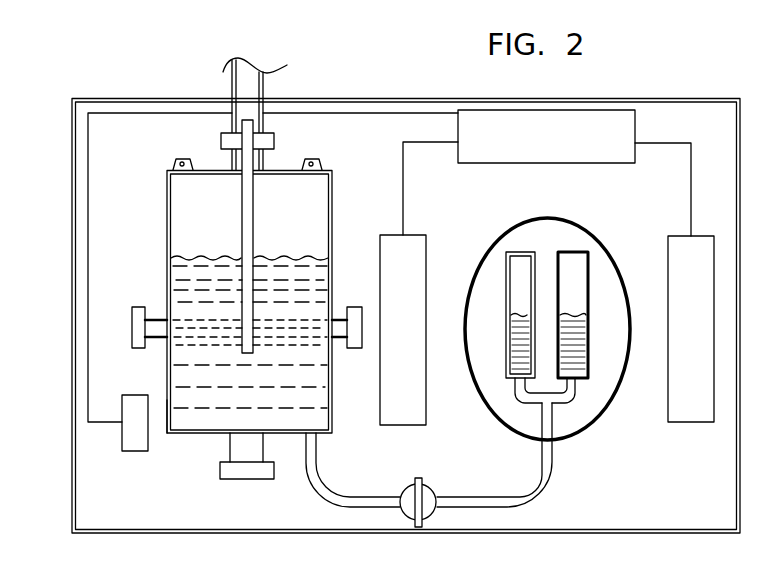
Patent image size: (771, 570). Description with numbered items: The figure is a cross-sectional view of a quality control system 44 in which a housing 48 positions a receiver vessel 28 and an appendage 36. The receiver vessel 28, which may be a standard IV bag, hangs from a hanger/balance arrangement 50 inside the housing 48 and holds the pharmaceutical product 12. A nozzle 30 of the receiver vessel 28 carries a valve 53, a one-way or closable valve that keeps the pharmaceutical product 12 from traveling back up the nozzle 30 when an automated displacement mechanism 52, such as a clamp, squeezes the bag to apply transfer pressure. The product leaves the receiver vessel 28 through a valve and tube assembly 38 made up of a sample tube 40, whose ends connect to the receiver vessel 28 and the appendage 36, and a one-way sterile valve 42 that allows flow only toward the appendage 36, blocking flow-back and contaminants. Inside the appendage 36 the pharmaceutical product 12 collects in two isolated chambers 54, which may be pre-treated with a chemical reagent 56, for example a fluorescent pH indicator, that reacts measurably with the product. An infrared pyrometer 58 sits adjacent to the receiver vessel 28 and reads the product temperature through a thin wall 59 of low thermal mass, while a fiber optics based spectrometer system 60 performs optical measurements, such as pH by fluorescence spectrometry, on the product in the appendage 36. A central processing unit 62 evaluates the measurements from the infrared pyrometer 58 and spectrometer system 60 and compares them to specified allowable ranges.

The pharmaceutical product 12 is at (199, 297).
The receiver vessel 28 is at (183, 434).
The nozzle 30 is at (254, 214).
The appendage 36 is at (563, 219).
The valve and tube assembly 38 is at (375, 480).
The sample tube 40 is at (318, 467).
The one-way sterile valve 42 is at (438, 489).
The quality control system 44 is at (707, 92).
The housing 48 is at (72, 390).
The hanger/balance arrangement 50 is at (186, 158).
The automated displacement mechanism 52 is at (143, 306).
The valve 53 is at (275, 138).
The chambers 54 is at (521, 258).
The chemical reagent 56 is at (506, 278).
The infrared pyrometer 58 is at (133, 452).
The thin wall 59 is at (167, 418).
The spectrometer system 60 is at (405, 234).
The central processing unit 62 is at (637, 126).